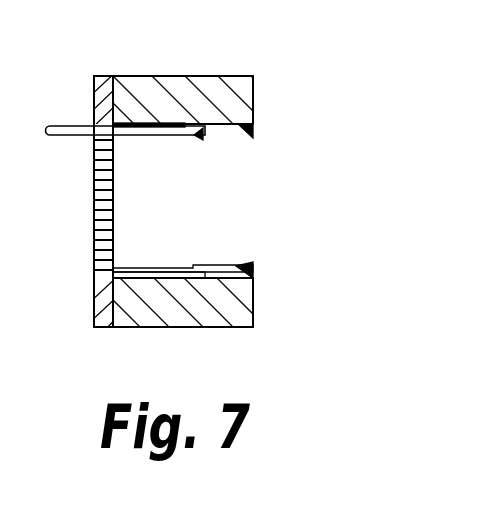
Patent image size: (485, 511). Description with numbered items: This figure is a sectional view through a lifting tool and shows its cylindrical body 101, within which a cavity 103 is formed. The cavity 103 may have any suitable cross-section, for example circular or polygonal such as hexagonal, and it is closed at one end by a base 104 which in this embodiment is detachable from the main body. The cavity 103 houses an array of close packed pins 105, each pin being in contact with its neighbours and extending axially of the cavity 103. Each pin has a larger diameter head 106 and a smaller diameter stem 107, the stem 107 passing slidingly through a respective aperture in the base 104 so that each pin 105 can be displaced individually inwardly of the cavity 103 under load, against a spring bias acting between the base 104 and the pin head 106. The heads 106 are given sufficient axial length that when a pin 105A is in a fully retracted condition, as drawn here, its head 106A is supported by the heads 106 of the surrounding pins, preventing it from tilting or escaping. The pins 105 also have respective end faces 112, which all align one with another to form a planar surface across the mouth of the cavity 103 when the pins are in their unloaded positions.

The cylindrical body 101 is at (205, 88).
The cavity 103 is at (248, 130).
The base 104 is at (104, 300).
The pins 105 is at (235, 267).
The pin in fully retracted condition 105A is at (204, 140).
The head 106 is at (210, 265).
The head of retracted pin 106A is at (170, 130).
The stem 107 is at (58, 136).
The end faces 112 is at (253, 278).